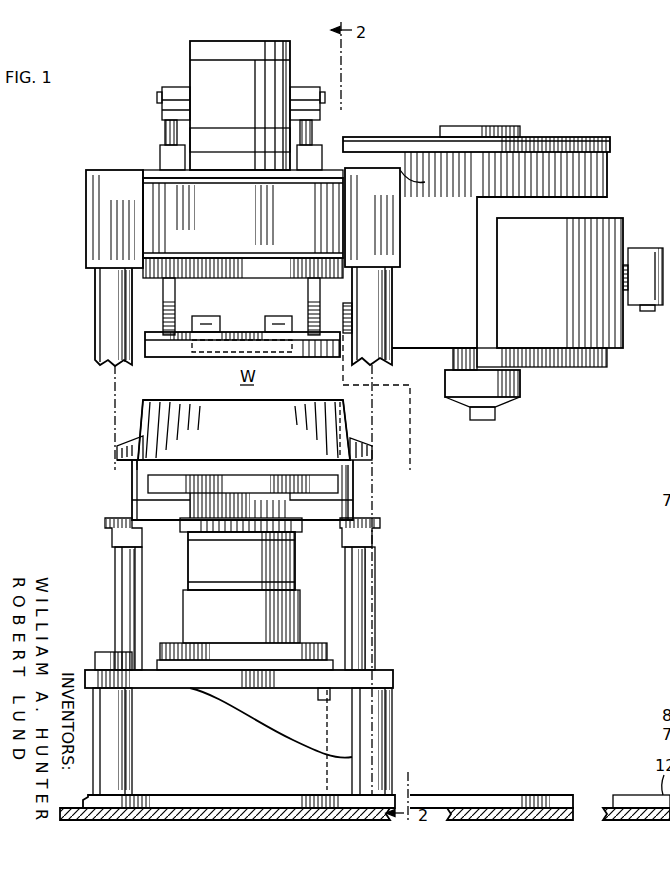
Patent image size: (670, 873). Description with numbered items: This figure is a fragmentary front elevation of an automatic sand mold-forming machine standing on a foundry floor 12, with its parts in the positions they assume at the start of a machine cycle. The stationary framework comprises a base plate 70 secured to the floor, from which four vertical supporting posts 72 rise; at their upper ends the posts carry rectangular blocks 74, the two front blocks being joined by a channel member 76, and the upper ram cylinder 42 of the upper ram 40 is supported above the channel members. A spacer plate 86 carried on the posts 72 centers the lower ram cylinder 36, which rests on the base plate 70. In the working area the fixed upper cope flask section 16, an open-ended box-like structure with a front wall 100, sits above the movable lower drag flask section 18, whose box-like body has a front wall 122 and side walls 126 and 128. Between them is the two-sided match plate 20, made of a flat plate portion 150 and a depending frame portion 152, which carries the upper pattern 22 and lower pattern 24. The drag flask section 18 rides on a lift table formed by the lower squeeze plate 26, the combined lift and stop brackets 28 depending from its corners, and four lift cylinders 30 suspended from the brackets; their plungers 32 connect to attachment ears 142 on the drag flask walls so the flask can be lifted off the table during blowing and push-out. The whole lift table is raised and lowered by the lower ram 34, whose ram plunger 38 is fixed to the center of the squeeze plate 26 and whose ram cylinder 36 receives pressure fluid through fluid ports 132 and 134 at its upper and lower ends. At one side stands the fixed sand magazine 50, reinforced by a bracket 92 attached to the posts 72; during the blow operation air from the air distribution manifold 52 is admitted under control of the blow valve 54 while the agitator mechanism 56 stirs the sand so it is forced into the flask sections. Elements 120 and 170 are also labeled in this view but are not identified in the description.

The foundry floor 12 is at (493, 808).
The upper cope flask section 16 is at (279, 280).
The lower drag flask section 18 is at (261, 442).
The match plate 20 is at (178, 354).
The upper pattern 22 is at (273, 330).
The lower pattern 24 is at (298, 352).
The lower squeeze plate 26 is at (340, 485).
The combined lift and stop brackets 28 is at (120, 511).
The lift cylinders 30 is at (141, 627).
The plungers 32 is at (128, 479).
The lower ram 34 is at (252, 577).
The ram cylinder 36 is at (300, 652).
The ram plunger 38 is at (268, 500).
The upper ram 40 is at (250, 143).
The upper ram cylinder 42 is at (285, 75).
The sand magazine 50 is at (429, 214).
The air distribution manifold 52 is at (562, 293).
The blow valve 54 is at (652, 282).
The agitator mechanism 56 is at (521, 386).
The base plate 70 is at (445, 795).
The supporting posts 72 is at (97, 314).
The rectangular blocks 74 is at (88, 213).
The channel member 76 is at (324, 171).
The spacer plate 86 is at (385, 678).
The bracket 92 is at (352, 318).
The front wall 100 is at (207, 279).
The bracket 120 is at (159, 98).
The front wall 122 is at (342, 412).
The side wall 126 is at (143, 418).
The side wall 128 is at (350, 426).
The fluid port 132 is at (322, 670).
The fluid port 134 is at (314, 781).
The attachment ears 142 is at (125, 443).
The plate portion 150 is at (238, 330).
The frame portion 152 is at (228, 353).
The guide post 170 is at (307, 300).